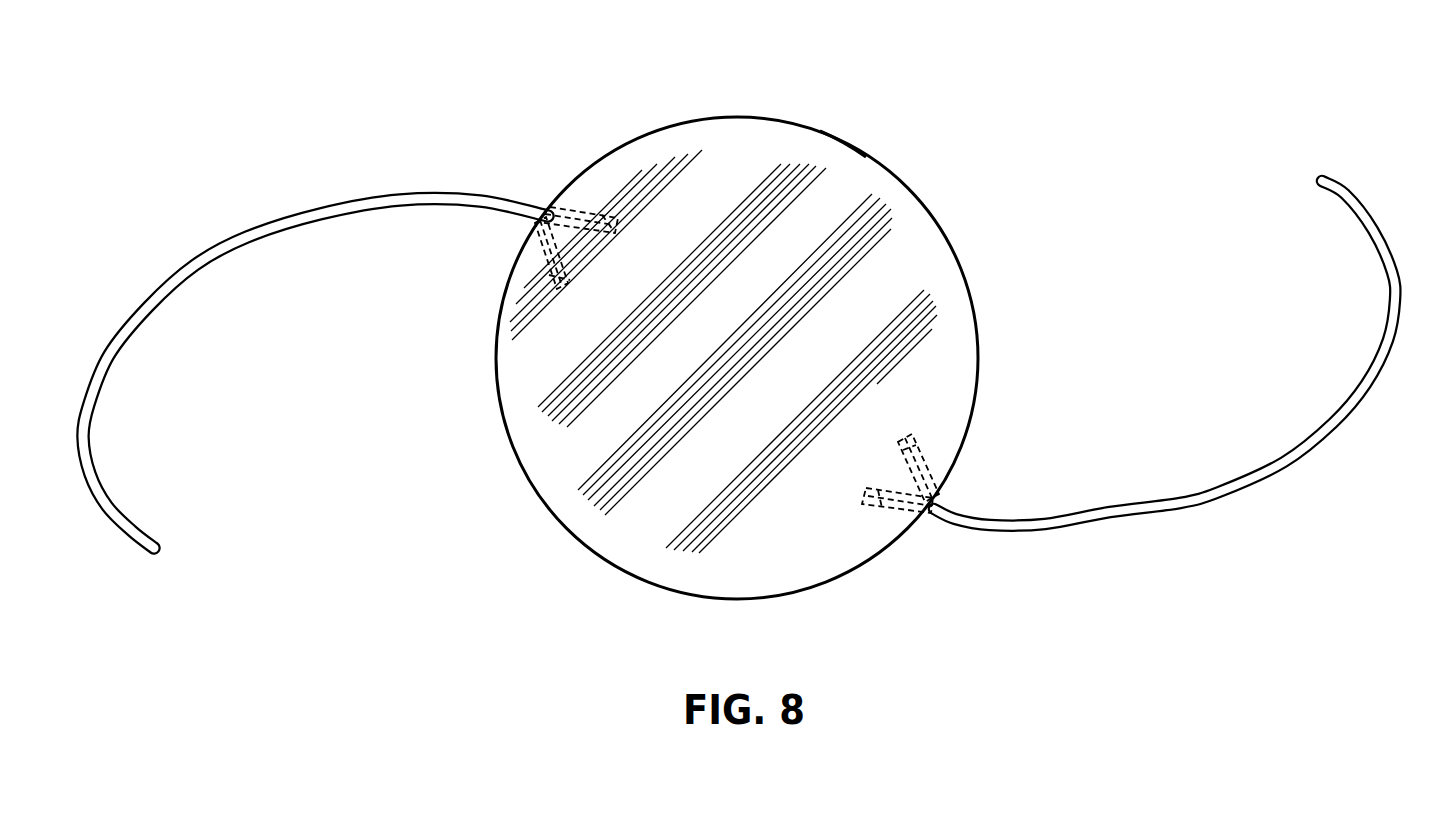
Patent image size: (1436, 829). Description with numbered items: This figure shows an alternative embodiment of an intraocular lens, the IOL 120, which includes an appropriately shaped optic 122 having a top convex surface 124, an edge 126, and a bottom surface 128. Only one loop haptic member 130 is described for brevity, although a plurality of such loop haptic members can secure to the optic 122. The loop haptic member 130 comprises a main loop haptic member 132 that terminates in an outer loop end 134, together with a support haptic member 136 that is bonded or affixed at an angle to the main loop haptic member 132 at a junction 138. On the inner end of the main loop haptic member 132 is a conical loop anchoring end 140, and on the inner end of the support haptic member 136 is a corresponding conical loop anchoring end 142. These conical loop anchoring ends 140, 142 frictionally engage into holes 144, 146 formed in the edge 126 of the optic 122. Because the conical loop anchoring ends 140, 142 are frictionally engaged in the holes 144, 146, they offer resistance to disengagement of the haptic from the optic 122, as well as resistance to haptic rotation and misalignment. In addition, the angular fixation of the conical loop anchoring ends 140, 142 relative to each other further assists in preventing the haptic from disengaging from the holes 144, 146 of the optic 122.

The IOL 120 is at (1005, 95).
The optic 122 is at (728, 117).
The top convex surface 124 is at (777, 143).
The edge 126 is at (843, 143).
The bottom surface 128 is at (855, 193).
The loop haptic member 130 is at (1325, 452).
The main loop haptic member 132 is at (1370, 372).
The outer loop end 134 is at (1316, 175).
The support haptic member 136 is at (930, 470).
The junction 138 is at (947, 507).
The conical loop anchoring end 140 is at (890, 507).
The conical loop anchoring end 142 is at (925, 452).
The hole 144 is at (863, 505).
The hole 146 is at (912, 433).